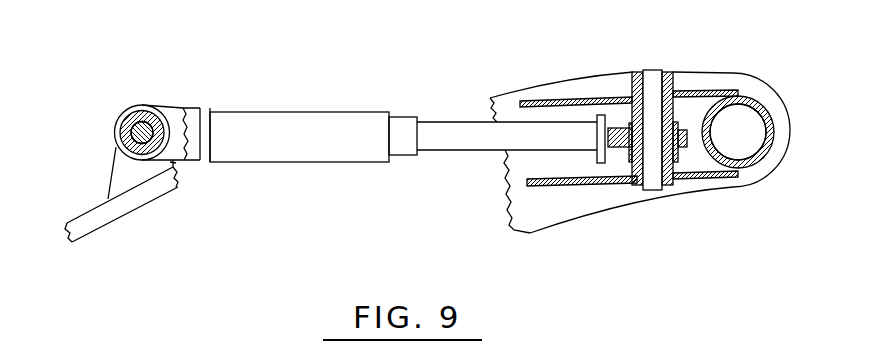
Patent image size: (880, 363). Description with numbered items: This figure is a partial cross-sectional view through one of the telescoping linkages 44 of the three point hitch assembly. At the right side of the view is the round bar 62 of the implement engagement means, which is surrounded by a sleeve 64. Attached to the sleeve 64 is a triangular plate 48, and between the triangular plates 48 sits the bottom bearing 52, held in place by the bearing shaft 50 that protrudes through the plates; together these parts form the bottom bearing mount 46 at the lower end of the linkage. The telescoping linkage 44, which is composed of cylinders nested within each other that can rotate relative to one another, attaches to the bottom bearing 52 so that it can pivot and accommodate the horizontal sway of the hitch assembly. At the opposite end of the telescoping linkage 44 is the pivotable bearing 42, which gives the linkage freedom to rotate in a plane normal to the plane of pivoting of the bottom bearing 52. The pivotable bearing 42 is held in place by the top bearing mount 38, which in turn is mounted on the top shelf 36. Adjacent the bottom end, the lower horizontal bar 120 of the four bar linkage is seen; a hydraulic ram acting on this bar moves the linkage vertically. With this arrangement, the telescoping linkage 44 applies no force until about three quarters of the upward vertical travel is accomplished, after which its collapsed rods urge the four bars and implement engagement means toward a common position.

The top shelf 36 is at (110, 213).
The top bearing mount 38 is at (120, 177).
The pivotable bearing 42 is at (130, 108).
The telescoping linkage 44 is at (383, 110).
The bottom bearing mount 46 is at (653, 212).
The triangular plate 48 is at (705, 90).
The bearing shaft 50 is at (633, 70).
The bottom bearing 52 is at (677, 176).
The round bar 62 is at (758, 137).
The sleeve 64 is at (755, 100).
The lower horizontal bar 120 is at (580, 203).